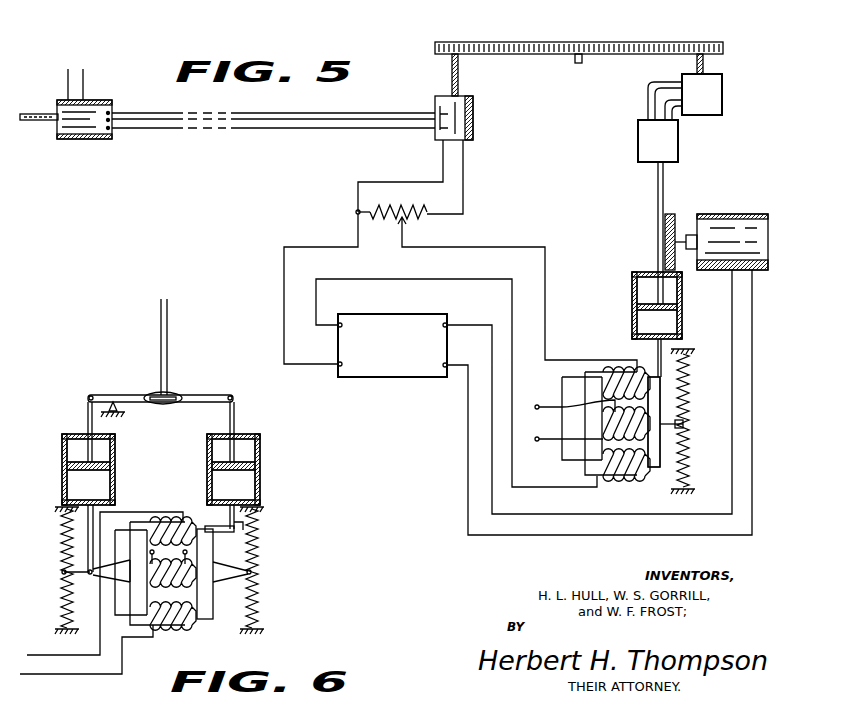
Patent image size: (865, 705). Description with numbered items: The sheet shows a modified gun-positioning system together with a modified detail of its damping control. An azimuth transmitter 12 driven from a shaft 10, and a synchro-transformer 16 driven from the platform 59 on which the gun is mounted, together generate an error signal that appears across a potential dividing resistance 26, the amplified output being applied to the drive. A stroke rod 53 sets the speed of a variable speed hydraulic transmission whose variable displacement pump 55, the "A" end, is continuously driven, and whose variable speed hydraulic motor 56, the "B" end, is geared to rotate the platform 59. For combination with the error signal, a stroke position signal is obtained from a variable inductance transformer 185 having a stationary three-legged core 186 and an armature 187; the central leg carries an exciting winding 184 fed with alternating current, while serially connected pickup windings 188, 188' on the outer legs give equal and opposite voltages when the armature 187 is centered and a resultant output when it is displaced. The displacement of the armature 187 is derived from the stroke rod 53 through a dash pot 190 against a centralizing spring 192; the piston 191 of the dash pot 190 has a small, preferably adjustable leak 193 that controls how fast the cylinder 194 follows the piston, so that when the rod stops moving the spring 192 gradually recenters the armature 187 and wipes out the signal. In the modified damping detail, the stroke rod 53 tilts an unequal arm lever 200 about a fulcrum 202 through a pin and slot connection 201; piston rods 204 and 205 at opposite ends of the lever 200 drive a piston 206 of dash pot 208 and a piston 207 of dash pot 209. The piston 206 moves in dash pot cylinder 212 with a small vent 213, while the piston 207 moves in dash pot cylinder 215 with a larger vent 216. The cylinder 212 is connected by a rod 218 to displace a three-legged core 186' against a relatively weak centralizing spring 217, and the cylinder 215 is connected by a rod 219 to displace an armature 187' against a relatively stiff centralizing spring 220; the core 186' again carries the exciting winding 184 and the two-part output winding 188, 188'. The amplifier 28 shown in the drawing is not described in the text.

In FIG. 5, the shaft 10 is at (40, 119).
In FIG. 5, the azimuth transmitter 12 is at (100, 137).
In FIG. 5, the synchro-transformer 16 is at (473, 136).
In FIG. 5, the potential dividing resistance 26 is at (405, 223).
In FIG. 5, the amplifier 28 is at (392, 359).
In FIG. 5, the stroke rod 53 is at (665, 189).
In FIG. 6, the stroke rod 53 is at (170, 348).
In FIG. 5, the variable displacement pump 55 is at (679, 141).
In FIG. 5, the variable speed hydraulic motor 56 is at (722, 96).
In FIG. 5, the platform 59 is at (614, 39).
In FIG. 5, the exciting winding 184 is at (568, 401).
In FIG. 6, the exciting winding 184 is at (157, 581).
In FIG. 5, the variable inductance transformer 185 is at (665, 493).
In FIG. 5, the three-legged core 186 is at (579, 427).
In FIG. 5, the armature 187 is at (690, 422).
In FIG. 5, the pickup winding 188 is at (620, 358).
In FIG. 6, the pickup winding 188 is at (174, 517).
In FIG. 5, the pickup winding 188' is at (625, 478).
In FIG. 6, the pickup winding 188' is at (185, 632).
In FIG. 5, the dash pot 190 is at (720, 322).
In FIG. 5, the piston 191 is at (668, 322).
In FIG. 5, the centralizing spring 192 is at (696, 421).
In FIG. 5, the leak or vent 193 is at (668, 299).
In FIG. 5, the cylinder 194 is at (633, 286).
In FIG. 6, the unequal arm lever 200 is at (218, 393).
In FIG. 6, the pin and slot connection 201 is at (172, 390).
In FIG. 6, the fulcrum 202 is at (113, 396).
In FIG. 6, the piston rod 204 is at (86, 416).
In FIG. 6, the piston rod 205 is at (237, 418).
In FIG. 6, the piston 206 is at (62, 451).
In FIG. 6, the piston 207 is at (258, 448).
In FIG. 6, the dash pot 208 is at (110, 447).
In FIG. 6, the dash pot 209 is at (255, 465).
In FIG. 6, the dash pot cylinder 212 is at (110, 490).
In FIG. 6, the vent hole or leak 213 is at (110, 465).
In FIG. 6, the dash pot cylinder 215 is at (212, 480).
In FIG. 6, the vent 216 is at (255, 490).
In FIG. 6, the centralizing spring 217 is at (58, 603).
In FIG. 6, the rod 218 is at (86, 540).
In FIG. 6, the rod 219 is at (248, 521).
In FIG. 6, the centralizing spring 220 is at (258, 606).
In FIG. 6, the three-legged core 186' is at (150, 591).
In FIG. 6, the armature 187' is at (219, 587).